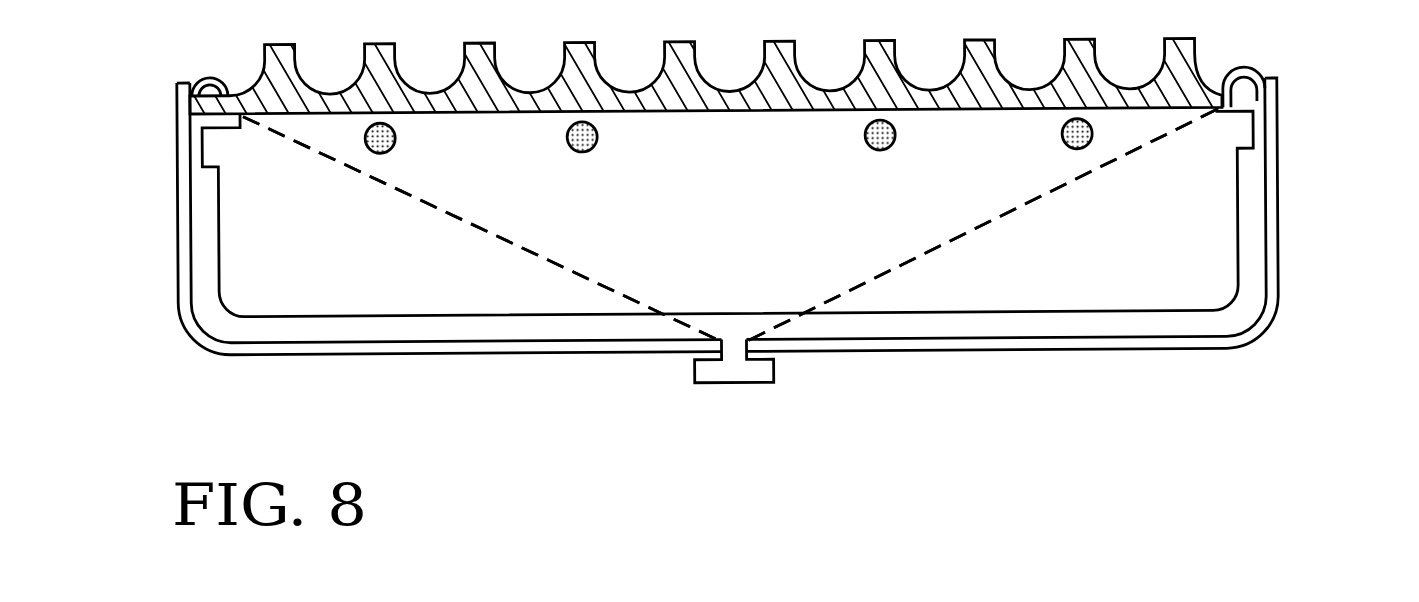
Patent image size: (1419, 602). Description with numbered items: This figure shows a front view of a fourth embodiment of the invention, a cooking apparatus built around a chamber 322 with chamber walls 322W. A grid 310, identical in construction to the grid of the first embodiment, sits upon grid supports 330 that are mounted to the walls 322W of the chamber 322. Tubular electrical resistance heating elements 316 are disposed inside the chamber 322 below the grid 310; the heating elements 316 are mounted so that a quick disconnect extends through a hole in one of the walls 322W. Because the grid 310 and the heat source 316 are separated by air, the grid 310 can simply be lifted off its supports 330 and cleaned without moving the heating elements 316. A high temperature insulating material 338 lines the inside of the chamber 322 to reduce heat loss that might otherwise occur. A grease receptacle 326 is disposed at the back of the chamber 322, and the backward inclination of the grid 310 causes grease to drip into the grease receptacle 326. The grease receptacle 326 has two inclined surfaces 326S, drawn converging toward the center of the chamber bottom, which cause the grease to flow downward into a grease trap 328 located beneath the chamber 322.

The grid 310 is at (700, 62).
The tubular electrical resistance heating element 316 is at (577, 120).
The chamber 322 is at (1107, 237).
The chamber wall 322W is at (1273, 232).
The grease receptacle 326 is at (548, 283).
The inclined surface 326S is at (455, 222).
The grease trap 328 is at (735, 385).
The grid support 330 is at (1243, 80).
The high temperature insulating material 338 is at (198, 274).